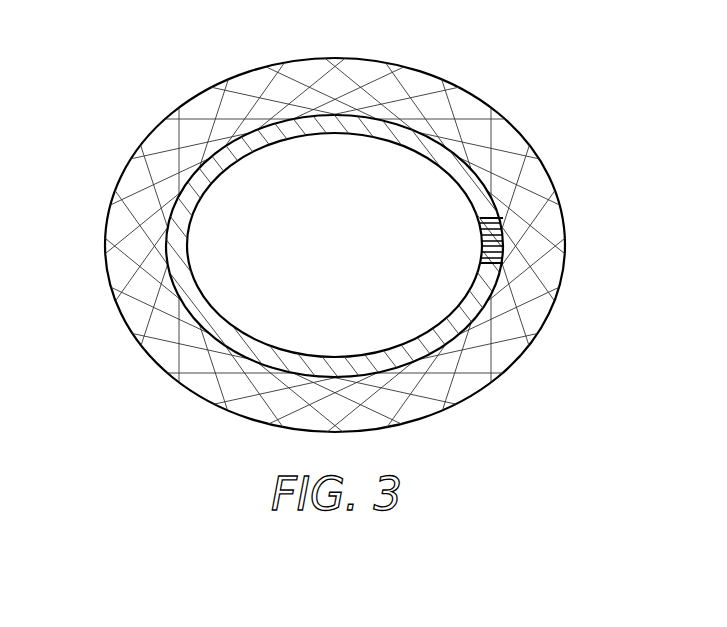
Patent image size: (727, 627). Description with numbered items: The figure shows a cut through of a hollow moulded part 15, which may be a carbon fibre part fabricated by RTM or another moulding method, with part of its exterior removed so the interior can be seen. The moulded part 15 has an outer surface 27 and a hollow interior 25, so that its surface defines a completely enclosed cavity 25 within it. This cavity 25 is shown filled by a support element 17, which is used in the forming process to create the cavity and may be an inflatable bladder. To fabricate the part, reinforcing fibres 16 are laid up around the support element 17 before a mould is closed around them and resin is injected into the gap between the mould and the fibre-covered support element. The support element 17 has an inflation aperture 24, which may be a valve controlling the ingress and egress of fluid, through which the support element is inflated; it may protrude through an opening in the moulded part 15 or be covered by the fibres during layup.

The moulded part 15 is at (363, 313).
The reinforcing fibres 16 is at (342, 282).
The support element 17 is at (363, 313).
The inflation aperture 24 is at (503, 238).
The hollow interior 25 is at (211, 158).
The outer surface 27 is at (507, 373).